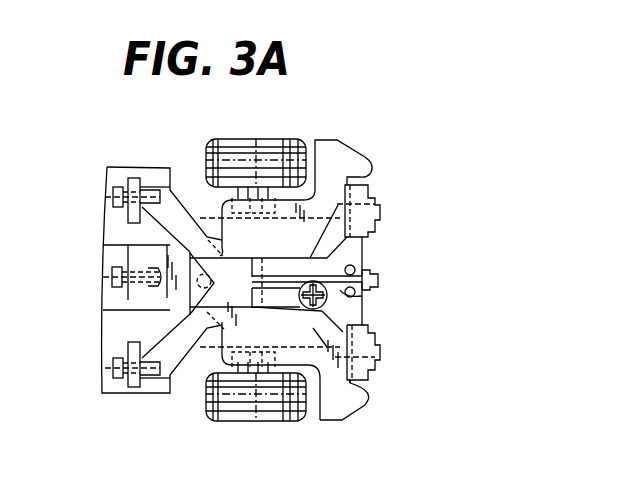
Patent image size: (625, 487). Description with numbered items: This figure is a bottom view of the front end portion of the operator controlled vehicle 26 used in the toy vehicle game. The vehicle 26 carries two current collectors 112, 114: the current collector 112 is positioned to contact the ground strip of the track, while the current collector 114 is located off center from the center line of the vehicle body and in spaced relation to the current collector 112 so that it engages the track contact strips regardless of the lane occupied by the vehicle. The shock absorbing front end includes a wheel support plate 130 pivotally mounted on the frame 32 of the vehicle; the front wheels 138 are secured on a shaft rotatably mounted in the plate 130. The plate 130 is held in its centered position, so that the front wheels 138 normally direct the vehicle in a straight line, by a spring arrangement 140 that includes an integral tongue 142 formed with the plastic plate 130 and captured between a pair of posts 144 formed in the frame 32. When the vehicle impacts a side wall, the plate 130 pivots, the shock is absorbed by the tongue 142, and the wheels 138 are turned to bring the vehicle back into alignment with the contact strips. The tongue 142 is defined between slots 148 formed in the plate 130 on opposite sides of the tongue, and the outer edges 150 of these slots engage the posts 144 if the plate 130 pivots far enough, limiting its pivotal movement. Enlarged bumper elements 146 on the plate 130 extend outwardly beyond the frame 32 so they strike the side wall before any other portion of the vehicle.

The operator controlled vehicle 26 is at (164, 158).
The frame 32 is at (214, 294).
The current collector 112 is at (374, 346).
The current collector 114 is at (378, 197).
The wheel support plate 130 is at (350, 155).
The front wheels 138 is at (295, 107).
The spring arrangement 140 is at (372, 266).
The tongue 142 is at (330, 303).
The posts 144 is at (357, 268).
The bumper elements 146 is at (338, 140).
The slots 148 is at (328, 263).
The outer edges 150 is at (300, 238).